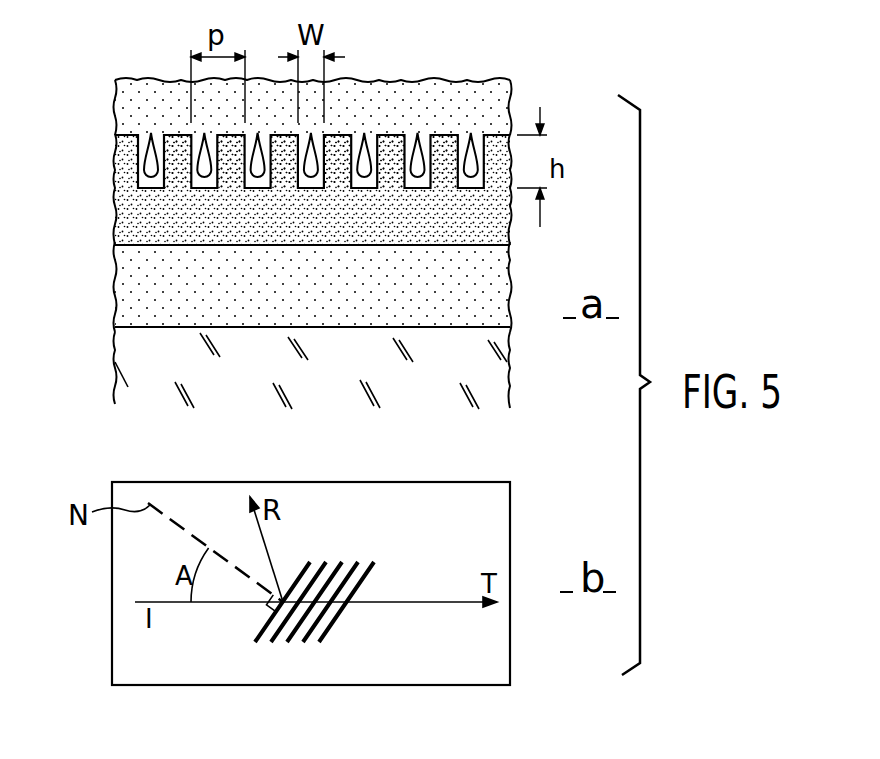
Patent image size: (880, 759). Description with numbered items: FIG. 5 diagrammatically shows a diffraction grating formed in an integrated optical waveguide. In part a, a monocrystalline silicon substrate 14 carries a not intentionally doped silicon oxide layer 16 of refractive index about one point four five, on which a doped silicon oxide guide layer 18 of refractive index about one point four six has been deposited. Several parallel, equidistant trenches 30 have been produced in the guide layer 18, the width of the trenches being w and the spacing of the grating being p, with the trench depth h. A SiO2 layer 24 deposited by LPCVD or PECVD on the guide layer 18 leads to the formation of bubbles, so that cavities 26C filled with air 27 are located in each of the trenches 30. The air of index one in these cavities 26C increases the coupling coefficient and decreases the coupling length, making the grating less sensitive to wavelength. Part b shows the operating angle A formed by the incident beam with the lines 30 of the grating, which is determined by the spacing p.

The monocrystalline silicon substrate 14 is at (147, 370).
The silicon oxide layer 16 is at (163, 300).
The silicon oxide guide layer 18 is at (158, 222).
The SiO2 layer 24 is at (485, 98).
The cavities 26C is at (319, 176).
The air 27 is at (413, 135).
The trenches 30 is at (147, 133).